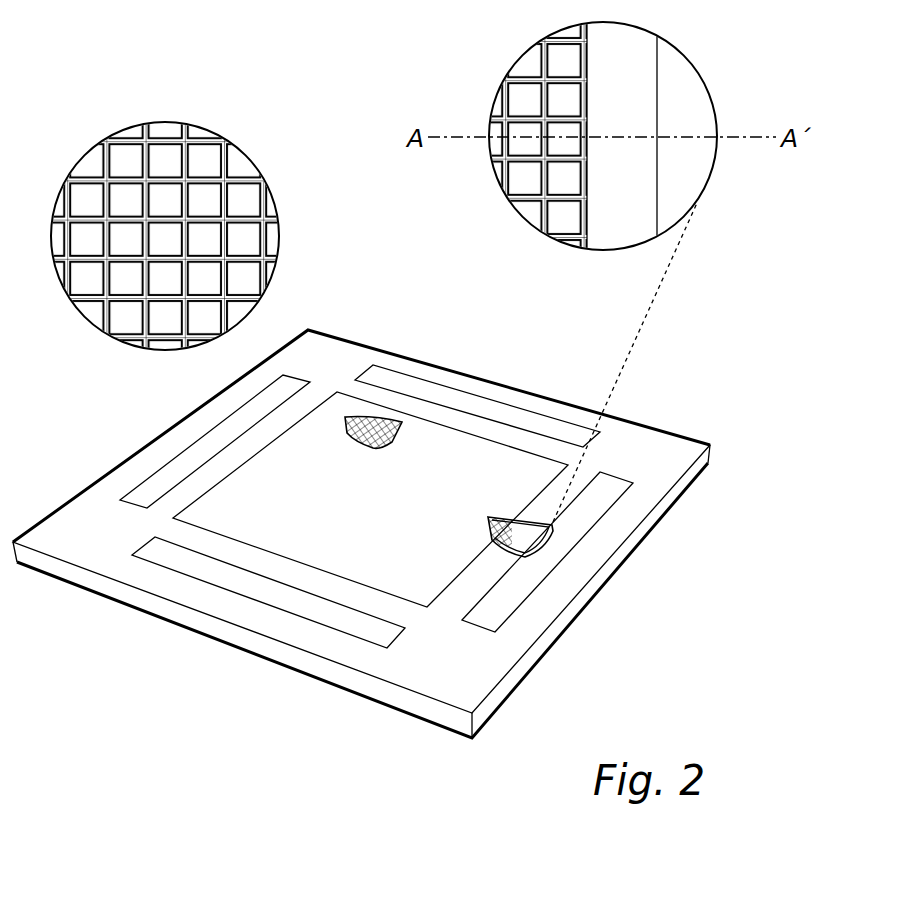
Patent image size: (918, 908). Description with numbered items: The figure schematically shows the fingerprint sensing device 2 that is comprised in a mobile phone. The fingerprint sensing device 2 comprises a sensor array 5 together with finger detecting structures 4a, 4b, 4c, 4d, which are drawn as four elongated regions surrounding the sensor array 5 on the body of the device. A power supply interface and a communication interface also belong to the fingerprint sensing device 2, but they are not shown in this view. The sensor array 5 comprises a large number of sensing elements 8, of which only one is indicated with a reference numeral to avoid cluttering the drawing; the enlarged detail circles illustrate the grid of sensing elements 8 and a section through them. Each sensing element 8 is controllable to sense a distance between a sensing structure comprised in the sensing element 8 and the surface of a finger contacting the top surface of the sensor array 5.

The fingerprint sensing device 2 is at (440, 305).
The finger detecting structure 4a is at (587, 517).
The finger detecting structure 4b is at (477, 408).
The finger detecting structure 4c is at (203, 455).
The finger detecting structure 4d is at (315, 610).
The sensor array 5 is at (220, 500).
The sensing element 8 is at (203, 277).